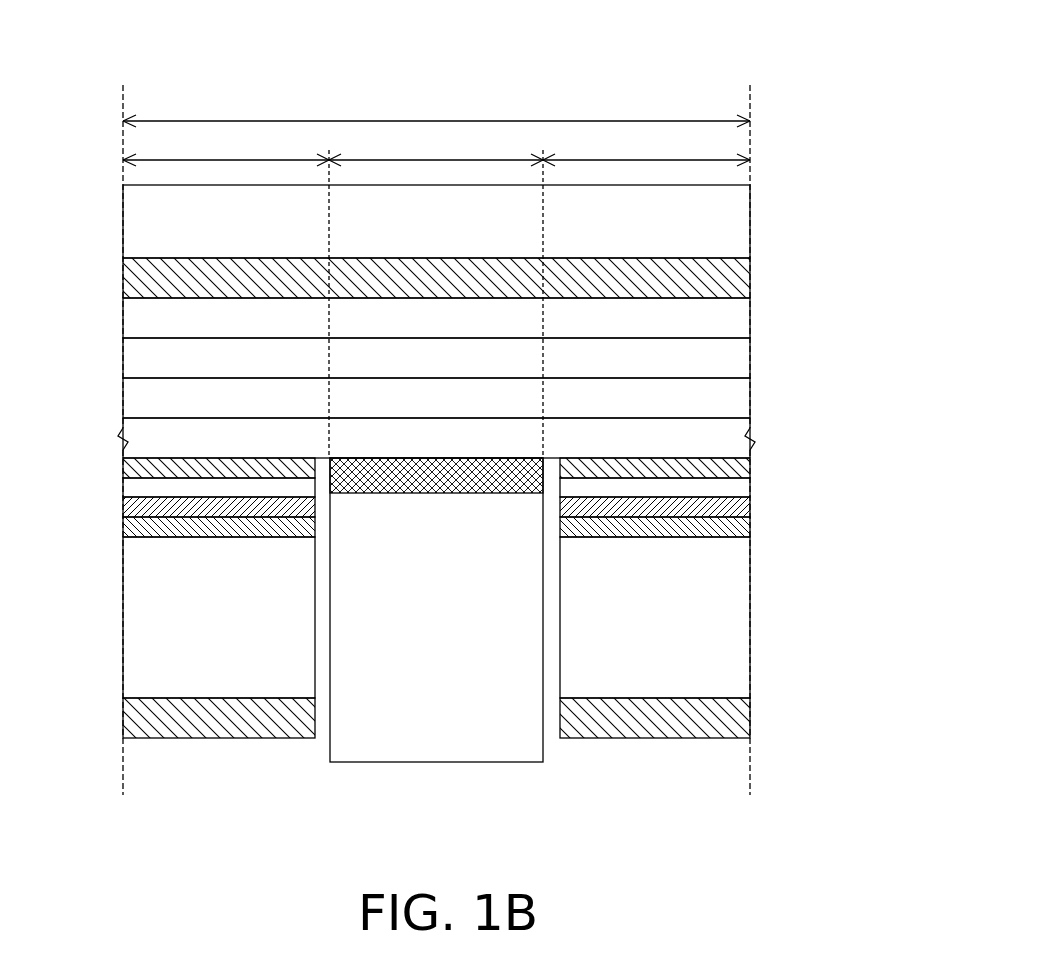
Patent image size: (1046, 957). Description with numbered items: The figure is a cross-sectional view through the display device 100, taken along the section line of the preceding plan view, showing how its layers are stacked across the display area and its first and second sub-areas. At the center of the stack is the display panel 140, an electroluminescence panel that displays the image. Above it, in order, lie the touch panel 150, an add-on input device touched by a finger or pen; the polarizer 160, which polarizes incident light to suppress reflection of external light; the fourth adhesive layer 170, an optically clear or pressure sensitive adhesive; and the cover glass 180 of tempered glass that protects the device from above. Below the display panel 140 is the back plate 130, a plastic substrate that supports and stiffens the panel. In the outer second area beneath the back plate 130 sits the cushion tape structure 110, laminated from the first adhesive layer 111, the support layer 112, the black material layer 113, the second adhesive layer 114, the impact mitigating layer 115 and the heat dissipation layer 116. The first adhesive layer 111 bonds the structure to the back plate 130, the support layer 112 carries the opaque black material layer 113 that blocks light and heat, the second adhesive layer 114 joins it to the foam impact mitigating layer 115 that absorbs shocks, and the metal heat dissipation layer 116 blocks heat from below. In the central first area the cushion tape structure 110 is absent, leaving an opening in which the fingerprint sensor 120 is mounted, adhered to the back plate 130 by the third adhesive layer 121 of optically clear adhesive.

The display device 100 is at (726, 31).
The cushion tape structure 110 is at (499, 596).
The first adhesive layer 111 is at (730, 467).
The support layer 112 is at (730, 487).
The black material layer 113 is at (730, 507).
The second adhesive layer 114 is at (730, 527).
The impact mitigating layer 115 is at (730, 642).
The heat dissipation layer 116 is at (471, 718).
The fingerprint sensor 120 is at (355, 559).
The third adhesive layer 121 is at (355, 480).
The back plate 130 is at (730, 440).
The display panel 140 is at (730, 397).
The touch panel 150 is at (730, 357).
The polarizer 160 is at (730, 318).
The fourth adhesive layer 170 is at (730, 272).
The cover glass 180 is at (730, 222).